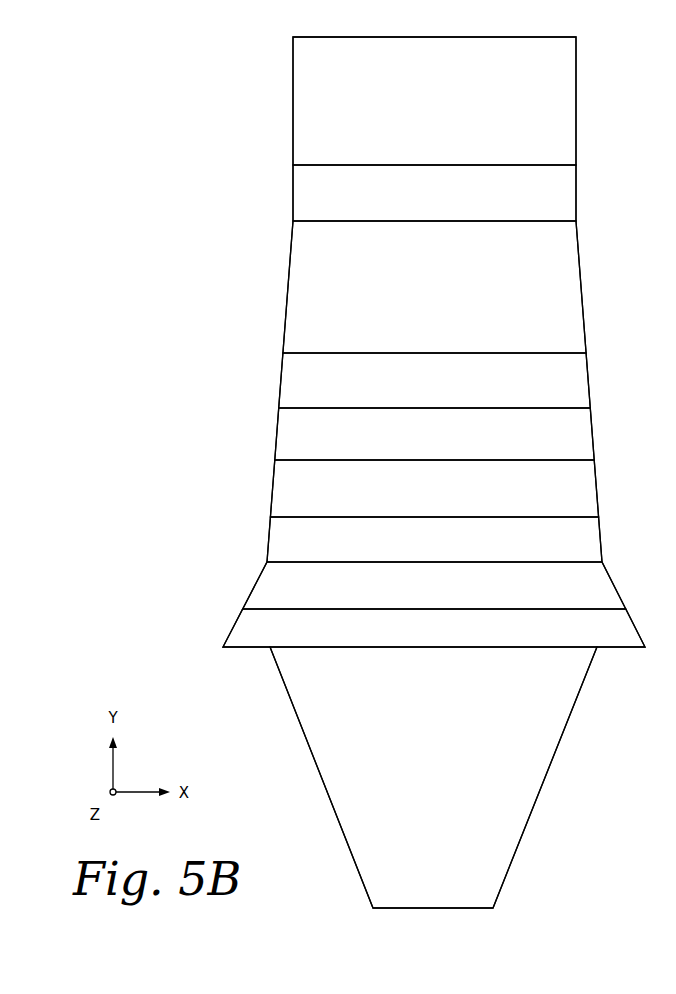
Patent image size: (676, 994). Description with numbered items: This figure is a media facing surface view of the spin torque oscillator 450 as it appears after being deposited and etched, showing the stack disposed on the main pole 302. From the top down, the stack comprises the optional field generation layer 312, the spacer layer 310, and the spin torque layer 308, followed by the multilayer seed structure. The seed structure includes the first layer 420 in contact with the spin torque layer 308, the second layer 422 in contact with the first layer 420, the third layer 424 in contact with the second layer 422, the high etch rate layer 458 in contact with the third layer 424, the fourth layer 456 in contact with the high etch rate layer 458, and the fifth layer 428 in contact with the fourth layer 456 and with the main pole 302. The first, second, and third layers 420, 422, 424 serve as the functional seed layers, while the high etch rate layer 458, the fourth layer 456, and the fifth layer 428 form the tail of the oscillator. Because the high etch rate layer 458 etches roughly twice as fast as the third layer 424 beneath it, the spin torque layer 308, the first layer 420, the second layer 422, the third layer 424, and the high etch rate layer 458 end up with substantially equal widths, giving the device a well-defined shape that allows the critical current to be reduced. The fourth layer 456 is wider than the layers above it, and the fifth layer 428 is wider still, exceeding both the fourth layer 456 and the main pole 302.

The spin torque oscillator 450 is at (224, 180).
The field generation layer 312 is at (414, 117).
The spacer layer 310 is at (414, 204).
The spin torque layer 308 is at (414, 296).
The first layer 420 is at (414, 391).
The second layer 422 is at (414, 446).
The third layer 424 is at (414, 501).
The high etch rate layer 458 is at (414, 549).
The fourth layer 456 is at (414, 596).
The fifth layer 428 is at (414, 639).
The main pole 302 is at (414, 782).